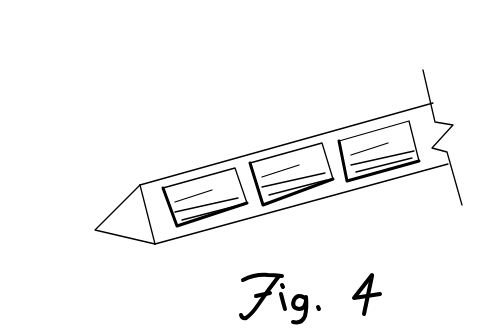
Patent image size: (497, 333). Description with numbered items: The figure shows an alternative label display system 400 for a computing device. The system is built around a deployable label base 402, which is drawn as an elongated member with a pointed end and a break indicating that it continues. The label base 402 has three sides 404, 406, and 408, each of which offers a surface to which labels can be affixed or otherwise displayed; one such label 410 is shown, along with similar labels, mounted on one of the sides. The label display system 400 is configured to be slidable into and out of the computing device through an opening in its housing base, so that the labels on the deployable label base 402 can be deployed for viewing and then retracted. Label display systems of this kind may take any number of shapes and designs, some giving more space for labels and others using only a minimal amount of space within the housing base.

The label display system 400 is at (251, 159).
The deployable label base 402 is at (358, 123).
The side 404 is at (338, 182).
The side 406 is at (250, 142).
The side 408 is at (121, 249).
The label 410 is at (188, 182).